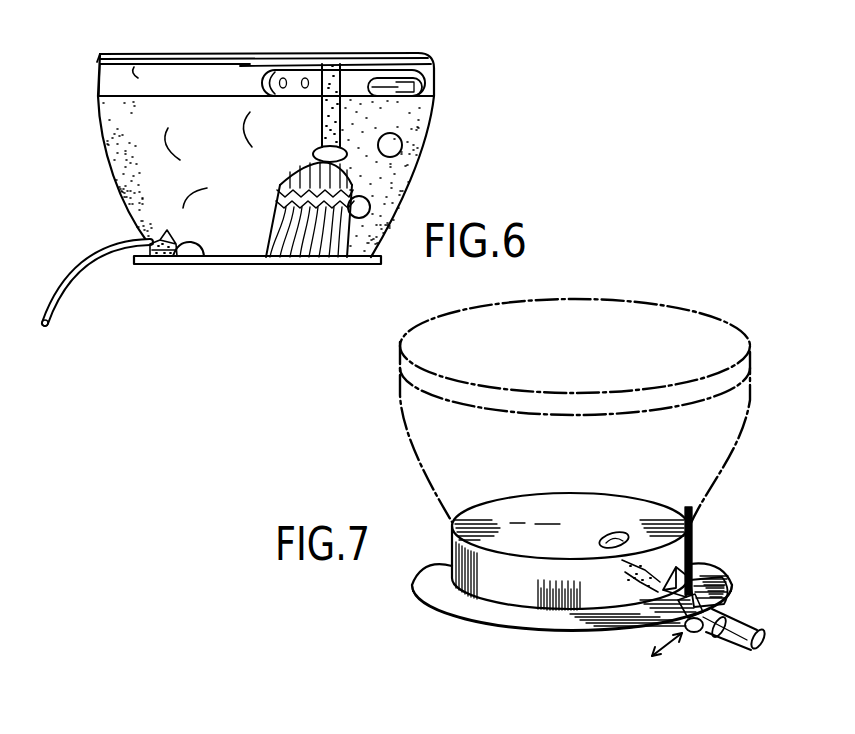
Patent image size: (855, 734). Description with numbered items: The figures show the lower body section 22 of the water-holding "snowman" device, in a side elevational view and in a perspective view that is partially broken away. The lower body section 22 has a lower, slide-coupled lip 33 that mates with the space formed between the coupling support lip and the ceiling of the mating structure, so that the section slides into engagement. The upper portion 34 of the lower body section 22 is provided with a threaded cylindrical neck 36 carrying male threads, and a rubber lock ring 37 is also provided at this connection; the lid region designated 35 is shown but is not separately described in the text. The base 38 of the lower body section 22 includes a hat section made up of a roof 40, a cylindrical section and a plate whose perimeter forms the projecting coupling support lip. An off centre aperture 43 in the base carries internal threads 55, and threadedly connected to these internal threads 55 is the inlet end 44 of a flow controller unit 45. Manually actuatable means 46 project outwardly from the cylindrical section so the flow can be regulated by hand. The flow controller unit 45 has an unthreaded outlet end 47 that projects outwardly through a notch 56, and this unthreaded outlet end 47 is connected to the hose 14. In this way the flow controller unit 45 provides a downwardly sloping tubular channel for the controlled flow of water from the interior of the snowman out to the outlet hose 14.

In FIG. 6, the hose 14 is at (92, 248).
In FIG. 7, the hose 14 is at (747, 623).
In FIG. 6, the lower body section 22 is at (423, 147).
In FIG. 6, the slide-coupled lip 33 is at (356, 267).
In FIG. 6, the upper portion 34 is at (131, 77).
In FIG. 6, the lid 35 is at (214, 52).
In FIG. 6, the threaded cylindrical neck 36 is at (316, 67).
In FIG. 6, the rubber lock ring 37 is at (410, 72).
In FIG. 7, the base 38 is at (480, 580).
In FIG. 7, the roof 40 is at (452, 507).
In FIG. 7, the off centre aperture 43 is at (616, 532).
In FIG. 7, the inlet end 44 is at (712, 598).
In FIG. 7, the flow controller unit 45 is at (777, 570).
In FIG. 6, the manually actuatable means 46 is at (172, 259).
In FIG. 7, the manually actuatable means 46 is at (698, 632).
In FIG. 7, the unthreaded outlet end 47 is at (724, 638).
In FIG. 7, the internal threads 55 is at (636, 583).
In FIG. 6, the notch 56 is at (197, 252).
In FIG. 7, the notch 56 is at (692, 562).